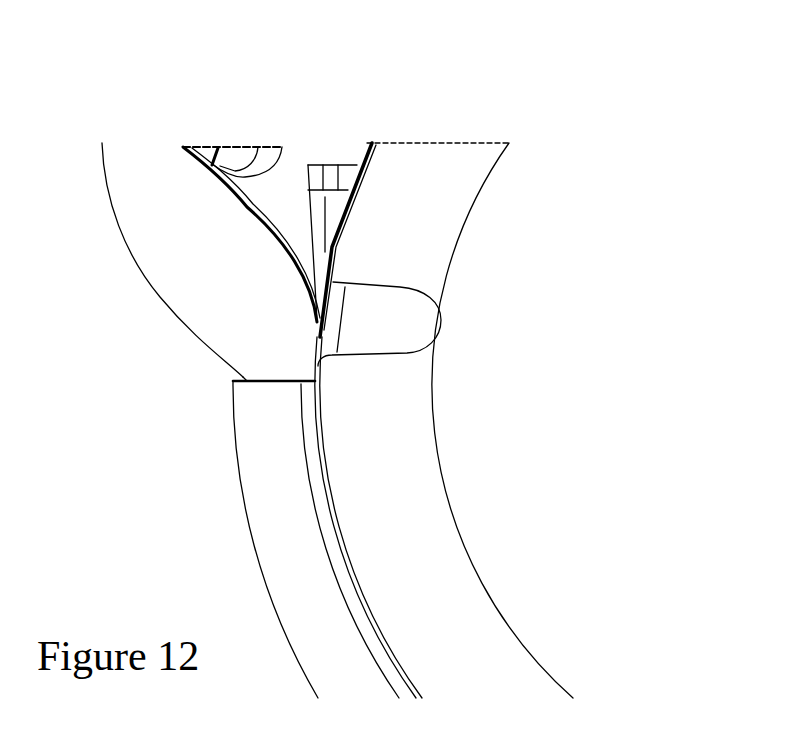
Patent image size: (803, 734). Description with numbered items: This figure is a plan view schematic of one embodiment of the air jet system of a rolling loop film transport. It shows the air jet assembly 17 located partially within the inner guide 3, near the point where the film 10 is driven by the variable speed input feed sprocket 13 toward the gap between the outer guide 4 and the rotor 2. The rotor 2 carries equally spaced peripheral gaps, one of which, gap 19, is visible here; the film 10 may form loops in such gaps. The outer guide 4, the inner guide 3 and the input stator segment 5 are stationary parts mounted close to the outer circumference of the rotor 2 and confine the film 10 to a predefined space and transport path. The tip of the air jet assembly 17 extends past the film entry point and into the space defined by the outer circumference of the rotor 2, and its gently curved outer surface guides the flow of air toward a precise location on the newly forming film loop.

The rotor 2 is at (429, 565).
The inner guide 3 is at (315, 155).
The outer guide 4 is at (170, 265).
The input stator segment 5 is at (275, 522).
The film 10 is at (317, 420).
The variable speed input feed sprocket 13 is at (241, 162).
The air jet assembly 17 is at (325, 208).
The peripheral gap 19 is at (393, 322).